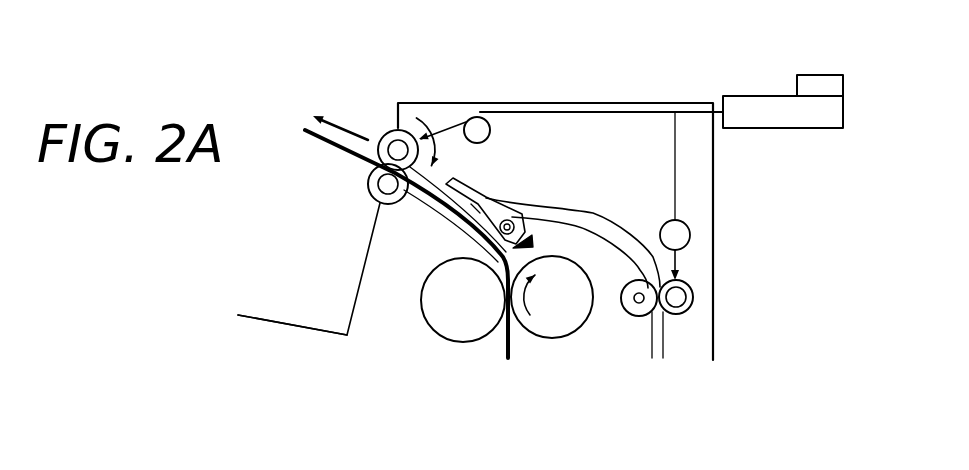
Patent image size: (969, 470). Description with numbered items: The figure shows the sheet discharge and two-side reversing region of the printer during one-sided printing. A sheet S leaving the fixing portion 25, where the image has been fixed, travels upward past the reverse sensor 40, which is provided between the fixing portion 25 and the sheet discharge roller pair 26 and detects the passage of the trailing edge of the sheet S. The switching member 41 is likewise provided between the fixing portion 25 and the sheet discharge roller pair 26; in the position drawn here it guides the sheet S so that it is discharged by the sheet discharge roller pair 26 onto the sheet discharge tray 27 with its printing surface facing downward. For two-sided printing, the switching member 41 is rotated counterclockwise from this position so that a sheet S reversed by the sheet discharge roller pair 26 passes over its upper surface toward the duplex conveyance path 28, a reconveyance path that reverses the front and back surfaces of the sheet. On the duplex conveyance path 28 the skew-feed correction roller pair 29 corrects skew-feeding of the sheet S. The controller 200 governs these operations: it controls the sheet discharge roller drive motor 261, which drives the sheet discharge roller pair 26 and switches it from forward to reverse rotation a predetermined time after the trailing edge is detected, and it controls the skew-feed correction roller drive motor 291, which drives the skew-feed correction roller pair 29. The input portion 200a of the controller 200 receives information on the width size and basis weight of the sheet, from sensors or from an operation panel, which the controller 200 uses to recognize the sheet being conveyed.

The sheet S is at (352, 153).
The sheet discharge roller pair 26 is at (390, 132).
The sheet discharge roller drive motor 261 is at (477, 117).
The reverse sensor 40 is at (527, 232).
The switching member 41 is at (475, 210).
The fixing portion 25 is at (556, 255).
The duplex conveyance path 28 is at (641, 235).
The skew-feed correction roller drive motor 291 is at (690, 235).
The skew-feed correction roller pair 29 is at (694, 296).
The controller 200 is at (761, 95).
The input portion 200a is at (823, 76).
The sheet discharge tray 27 is at (287, 323).